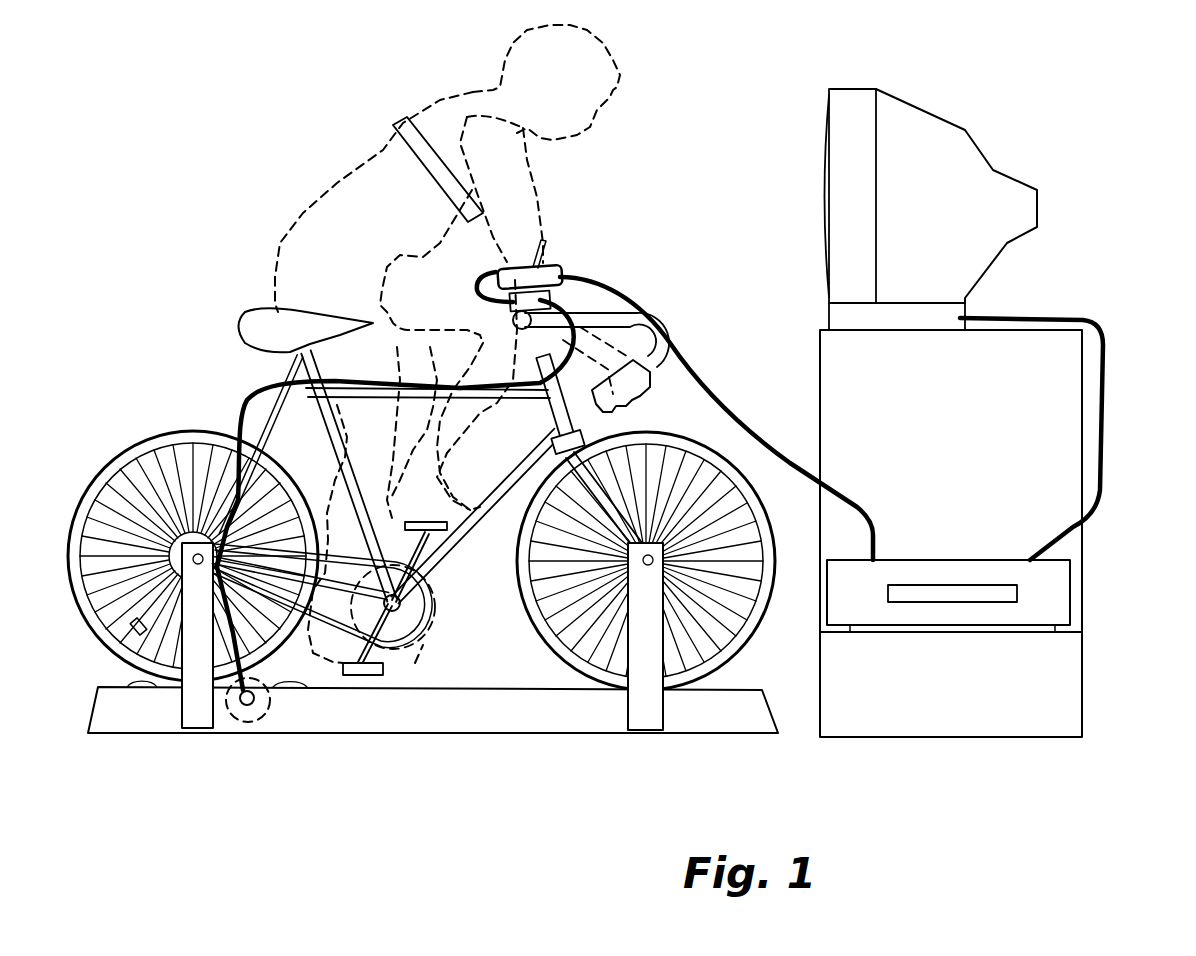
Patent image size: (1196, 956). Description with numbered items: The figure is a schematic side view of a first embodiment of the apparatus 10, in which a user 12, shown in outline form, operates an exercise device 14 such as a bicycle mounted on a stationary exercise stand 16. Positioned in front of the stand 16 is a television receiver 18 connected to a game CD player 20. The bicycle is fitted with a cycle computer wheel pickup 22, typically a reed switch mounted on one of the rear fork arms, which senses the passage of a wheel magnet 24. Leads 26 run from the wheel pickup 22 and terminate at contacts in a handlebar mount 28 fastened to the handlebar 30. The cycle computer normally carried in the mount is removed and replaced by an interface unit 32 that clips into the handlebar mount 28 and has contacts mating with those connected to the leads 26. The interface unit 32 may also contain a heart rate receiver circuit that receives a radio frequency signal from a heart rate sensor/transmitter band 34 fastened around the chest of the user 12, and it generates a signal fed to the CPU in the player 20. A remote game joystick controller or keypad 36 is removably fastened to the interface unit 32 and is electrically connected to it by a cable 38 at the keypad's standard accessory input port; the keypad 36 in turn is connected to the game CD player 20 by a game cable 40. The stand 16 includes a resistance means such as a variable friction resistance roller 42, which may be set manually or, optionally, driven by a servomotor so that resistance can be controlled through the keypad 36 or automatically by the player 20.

The apparatus 10 is at (183, 211).
The user 12 is at (620, 88).
The exercise device 14 is at (236, 378).
The stationary exercise stand 16 is at (150, 715).
The television receiver 18 is at (993, 170).
The game CD player 20 is at (1062, 598).
The cycle computer wheel pickup 22 is at (148, 443).
The wheel magnet 24 is at (130, 628).
The leads 26 is at (237, 410).
The handlebar mount 28 is at (513, 317).
The handlebar 30 is at (615, 320).
The interface unit 32 is at (562, 277).
The heart rate sensor/transmitter band 34 is at (387, 148).
The keypad 36 is at (547, 250).
The cable 38 is at (485, 280).
The game cable 40 is at (690, 358).
The variable friction resistance roller 42 is at (313, 690).